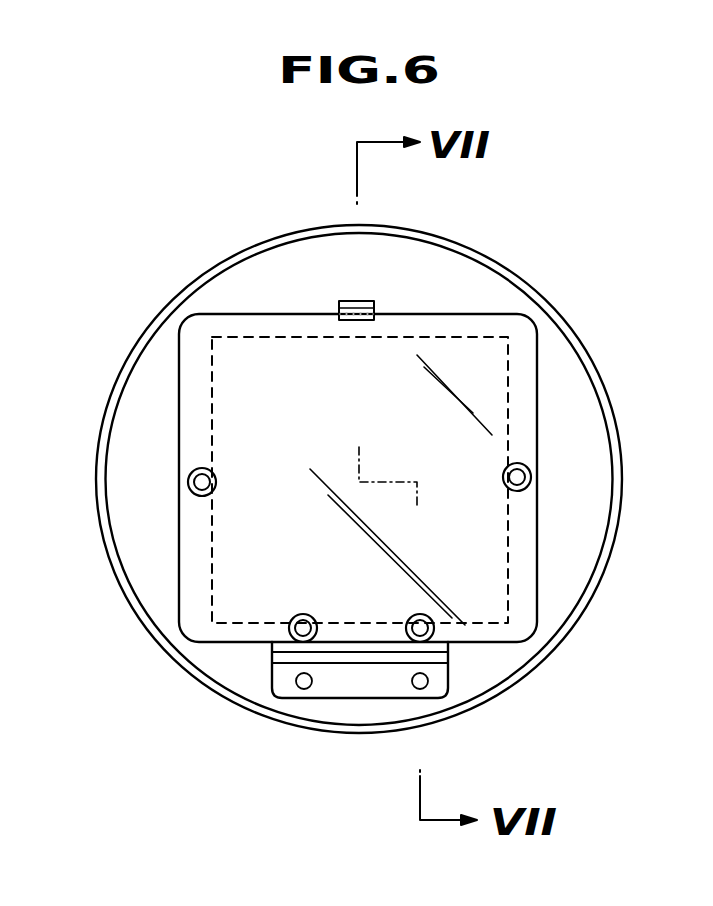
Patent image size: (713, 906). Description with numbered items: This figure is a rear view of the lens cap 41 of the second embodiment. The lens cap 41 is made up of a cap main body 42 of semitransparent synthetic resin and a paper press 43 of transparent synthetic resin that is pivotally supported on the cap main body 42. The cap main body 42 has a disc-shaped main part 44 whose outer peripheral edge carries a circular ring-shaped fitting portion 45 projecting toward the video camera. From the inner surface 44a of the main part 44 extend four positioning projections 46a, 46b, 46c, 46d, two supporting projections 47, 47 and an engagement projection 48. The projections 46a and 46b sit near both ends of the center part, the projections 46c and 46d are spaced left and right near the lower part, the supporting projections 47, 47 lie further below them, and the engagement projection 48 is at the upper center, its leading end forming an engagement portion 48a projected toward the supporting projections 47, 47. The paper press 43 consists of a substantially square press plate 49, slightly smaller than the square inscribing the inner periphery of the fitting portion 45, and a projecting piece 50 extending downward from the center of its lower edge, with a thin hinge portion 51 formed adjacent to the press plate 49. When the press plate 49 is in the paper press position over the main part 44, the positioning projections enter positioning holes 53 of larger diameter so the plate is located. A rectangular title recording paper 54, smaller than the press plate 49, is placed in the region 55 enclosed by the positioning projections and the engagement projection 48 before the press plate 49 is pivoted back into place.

The lens cap 41 is at (592, 282).
The cap main body 42 is at (612, 405).
The paper press 43 is at (538, 443).
The main part 44 is at (600, 525).
The inner surface 44a is at (592, 502).
The fitting portion 45 is at (603, 567).
The positioning projection 46a is at (215, 482).
The positioning projection 46b is at (505, 478).
The positioning projection 46c is at (305, 614).
The positioning projection 46d is at (423, 615).
The supporting projection 47 is at (302, 688).
The engagement projection 48 is at (361, 300).
The engagement portion 48a is at (369, 318).
The press plate 49 is at (528, 372).
The projecting piece 50 is at (355, 697).
The thin hinge portion 51 is at (280, 658).
The positioning hole 53 is at (525, 477).
The title recording paper 54 is at (212, 562).
The region 55 is at (247, 390).